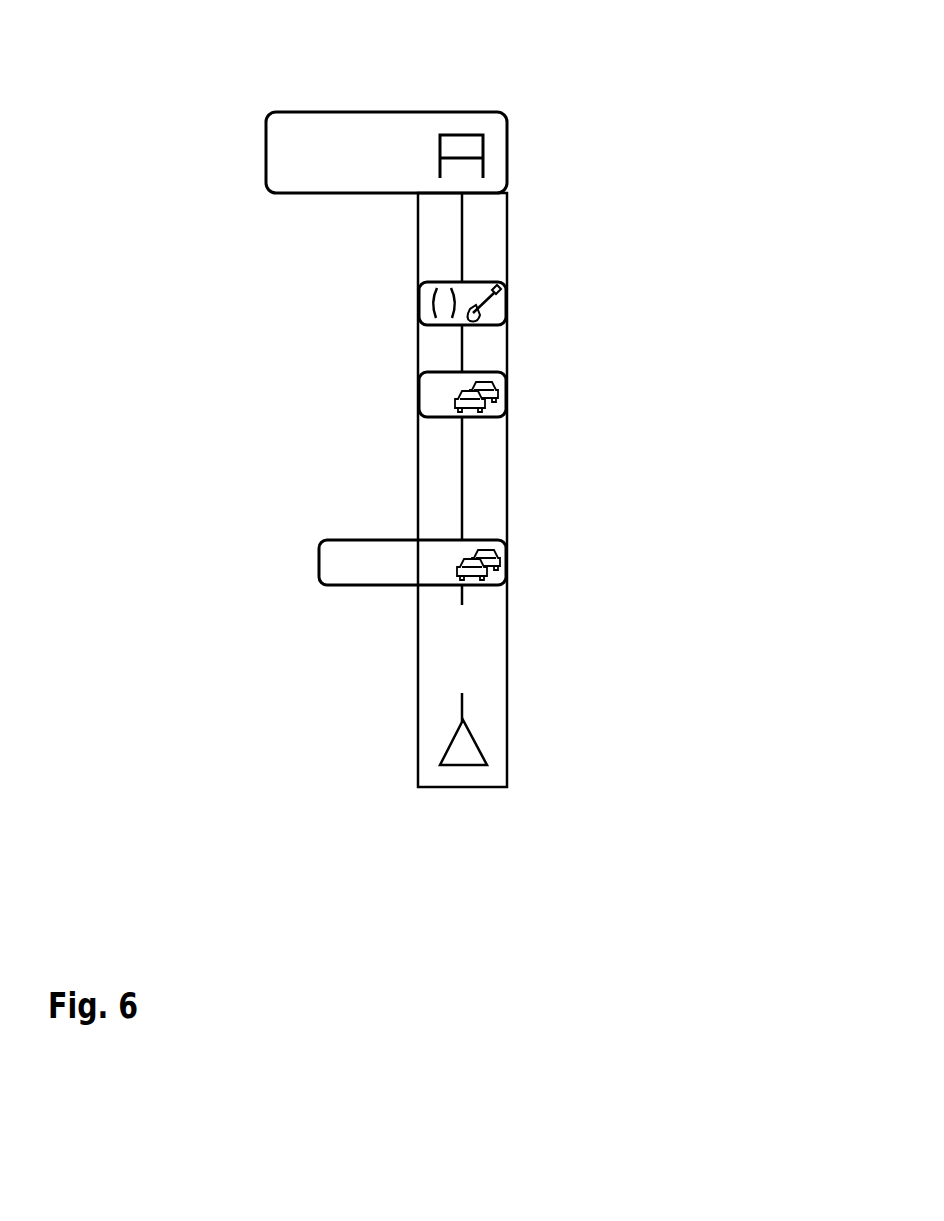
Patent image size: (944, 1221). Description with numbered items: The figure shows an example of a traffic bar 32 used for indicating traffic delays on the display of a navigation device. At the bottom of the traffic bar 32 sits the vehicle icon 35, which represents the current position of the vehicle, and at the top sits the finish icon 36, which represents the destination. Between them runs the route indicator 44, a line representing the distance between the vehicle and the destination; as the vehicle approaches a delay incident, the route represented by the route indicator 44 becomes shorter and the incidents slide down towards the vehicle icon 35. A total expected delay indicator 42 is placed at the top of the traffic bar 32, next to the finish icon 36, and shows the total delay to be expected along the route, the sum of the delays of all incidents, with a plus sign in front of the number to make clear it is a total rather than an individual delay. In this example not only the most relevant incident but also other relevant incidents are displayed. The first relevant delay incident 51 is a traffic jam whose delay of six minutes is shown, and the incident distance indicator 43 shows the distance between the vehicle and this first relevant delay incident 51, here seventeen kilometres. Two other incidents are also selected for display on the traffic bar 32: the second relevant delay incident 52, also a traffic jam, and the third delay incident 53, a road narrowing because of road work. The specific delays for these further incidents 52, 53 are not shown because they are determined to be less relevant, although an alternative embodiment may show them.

The traffic bar 32 is at (508, 483).
The vehicle icon 35 is at (460, 750).
The finish icon 36 is at (465, 148).
The total expected delay indicator 42 is at (385, 195).
The distance indicator 43 is at (460, 650).
The route indicator 44 is at (463, 242).
The first relevant delay incident 51 is at (319, 562).
The second relevant delay incident 52 is at (438, 383).
The third delay incident 53 is at (508, 303).